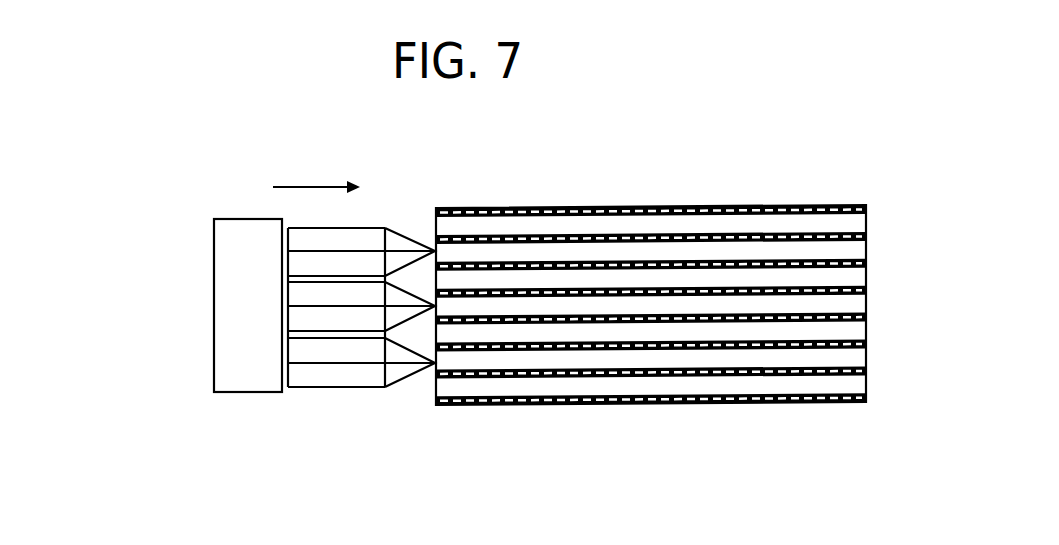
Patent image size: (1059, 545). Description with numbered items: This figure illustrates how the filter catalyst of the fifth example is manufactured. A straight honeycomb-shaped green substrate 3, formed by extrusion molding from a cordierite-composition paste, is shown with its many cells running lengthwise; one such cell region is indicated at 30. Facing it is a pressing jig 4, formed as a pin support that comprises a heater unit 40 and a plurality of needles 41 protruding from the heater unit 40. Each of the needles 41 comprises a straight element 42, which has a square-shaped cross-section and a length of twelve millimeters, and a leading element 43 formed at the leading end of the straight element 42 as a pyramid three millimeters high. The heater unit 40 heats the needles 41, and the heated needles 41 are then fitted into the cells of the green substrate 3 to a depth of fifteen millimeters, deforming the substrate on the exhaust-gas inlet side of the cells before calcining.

The green substrate 3 is at (655, 206).
The fiber strand 30 is at (858, 222).
The pressing jig 4 is at (203, 216).
The heater unit 40 is at (242, 382).
The needles 41 is at (330, 377).
The straight element 42 is at (365, 227).
The leading element 43 is at (405, 237).